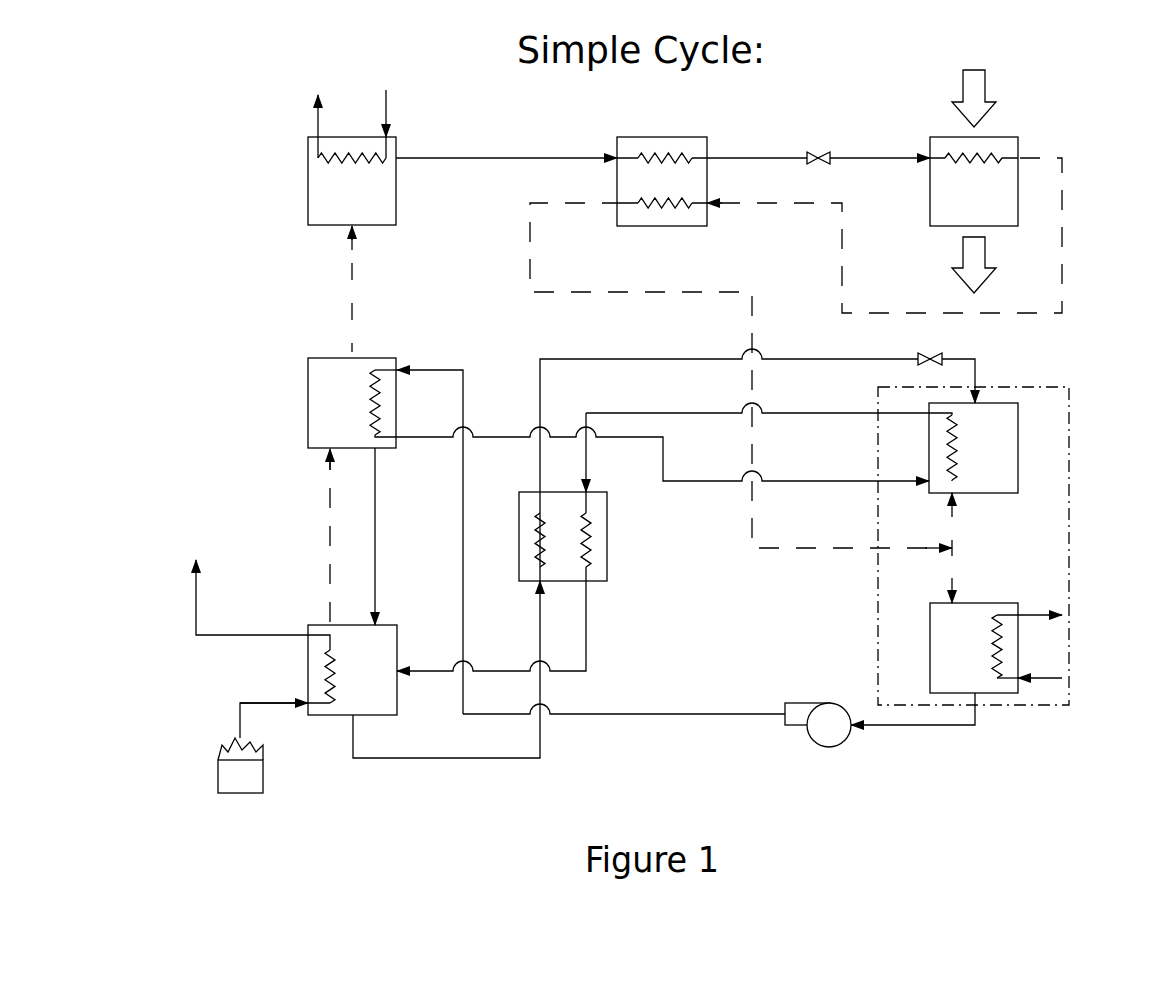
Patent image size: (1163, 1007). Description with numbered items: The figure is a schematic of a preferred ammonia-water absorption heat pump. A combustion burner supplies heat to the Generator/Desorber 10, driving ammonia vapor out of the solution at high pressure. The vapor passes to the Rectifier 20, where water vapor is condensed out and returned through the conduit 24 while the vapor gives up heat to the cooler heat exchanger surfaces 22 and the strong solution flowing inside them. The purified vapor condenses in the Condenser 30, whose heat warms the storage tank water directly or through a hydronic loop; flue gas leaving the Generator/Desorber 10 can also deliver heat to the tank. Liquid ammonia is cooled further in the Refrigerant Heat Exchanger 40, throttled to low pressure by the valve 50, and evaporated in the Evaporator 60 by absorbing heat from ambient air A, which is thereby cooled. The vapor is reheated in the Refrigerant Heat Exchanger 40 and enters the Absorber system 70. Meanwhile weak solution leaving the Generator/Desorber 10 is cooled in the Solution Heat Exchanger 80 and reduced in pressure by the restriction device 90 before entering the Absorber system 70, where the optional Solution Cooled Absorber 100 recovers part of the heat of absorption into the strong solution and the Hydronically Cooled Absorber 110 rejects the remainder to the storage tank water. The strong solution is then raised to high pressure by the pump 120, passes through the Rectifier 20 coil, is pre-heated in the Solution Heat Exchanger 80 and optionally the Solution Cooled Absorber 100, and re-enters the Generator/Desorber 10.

The Generator/Desorber 10 is at (355, 671).
The Rectifier 20 is at (352, 491).
The heat exchanger surfaces 22 is at (372, 421).
The conduit 24 is at (373, 539).
The Condenser 30 is at (365, 199).
The Refrigerant Heat Exchanger 40 is at (618, 138).
The valve 50 is at (831, 157).
The Evaporator 60 is at (884, 191).
The Absorber system 70 is at (1069, 475).
The Solution Heat Exchanger 80 is at (607, 581).
The restriction device 90 is at (940, 355).
The Solution Cooled Absorber 100 is at (803, 460).
The Hydronically Cooled Absorber 110 is at (1019, 660).
The pump 120 is at (800, 703).
The ambient air A is at (983, 60).